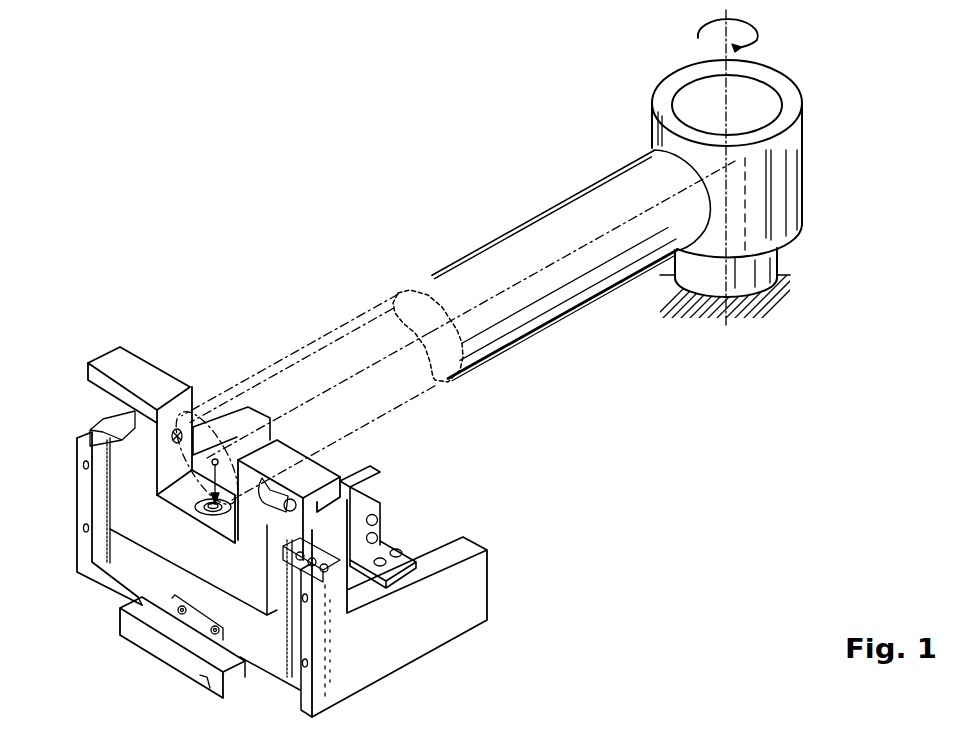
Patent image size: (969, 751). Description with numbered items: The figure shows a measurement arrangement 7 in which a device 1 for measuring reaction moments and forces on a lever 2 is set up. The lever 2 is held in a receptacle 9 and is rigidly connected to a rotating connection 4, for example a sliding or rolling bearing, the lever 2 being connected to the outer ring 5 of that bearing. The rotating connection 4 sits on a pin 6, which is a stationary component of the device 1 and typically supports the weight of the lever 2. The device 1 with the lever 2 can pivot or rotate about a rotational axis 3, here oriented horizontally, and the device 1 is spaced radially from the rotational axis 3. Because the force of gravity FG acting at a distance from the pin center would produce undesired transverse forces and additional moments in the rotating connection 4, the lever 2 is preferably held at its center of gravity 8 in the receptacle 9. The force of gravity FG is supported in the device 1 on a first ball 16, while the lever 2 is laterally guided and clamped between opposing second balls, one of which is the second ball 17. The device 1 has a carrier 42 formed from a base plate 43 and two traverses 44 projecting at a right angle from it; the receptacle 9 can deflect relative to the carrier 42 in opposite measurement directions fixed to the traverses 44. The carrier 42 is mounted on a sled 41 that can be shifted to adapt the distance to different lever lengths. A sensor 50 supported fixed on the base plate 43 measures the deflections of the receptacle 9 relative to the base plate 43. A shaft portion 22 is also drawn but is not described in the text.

The device 1 is at (141, 348).
The lever 2 is at (524, 316).
The rotational axis 3 is at (700, 33).
The rotating connection 4 is at (798, 100).
The outer ring 5 is at (800, 187).
The pin 6 is at (775, 263).
The measurement arrangement 7 is at (343, 272).
The center of gravity 8 is at (217, 458).
The receptacle 9 is at (247, 587).
The first ball 16 is at (216, 516).
The second ball 17 is at (177, 428).
The shaft extension 22 is at (307, 407).
The sled 41 is at (132, 640).
The carrier 42 is at (113, 598).
The base plate 43 is at (278, 688).
The traverses 44 is at (80, 500).
The sensor 50 is at (357, 496).
The force of gravity FG is at (205, 510).